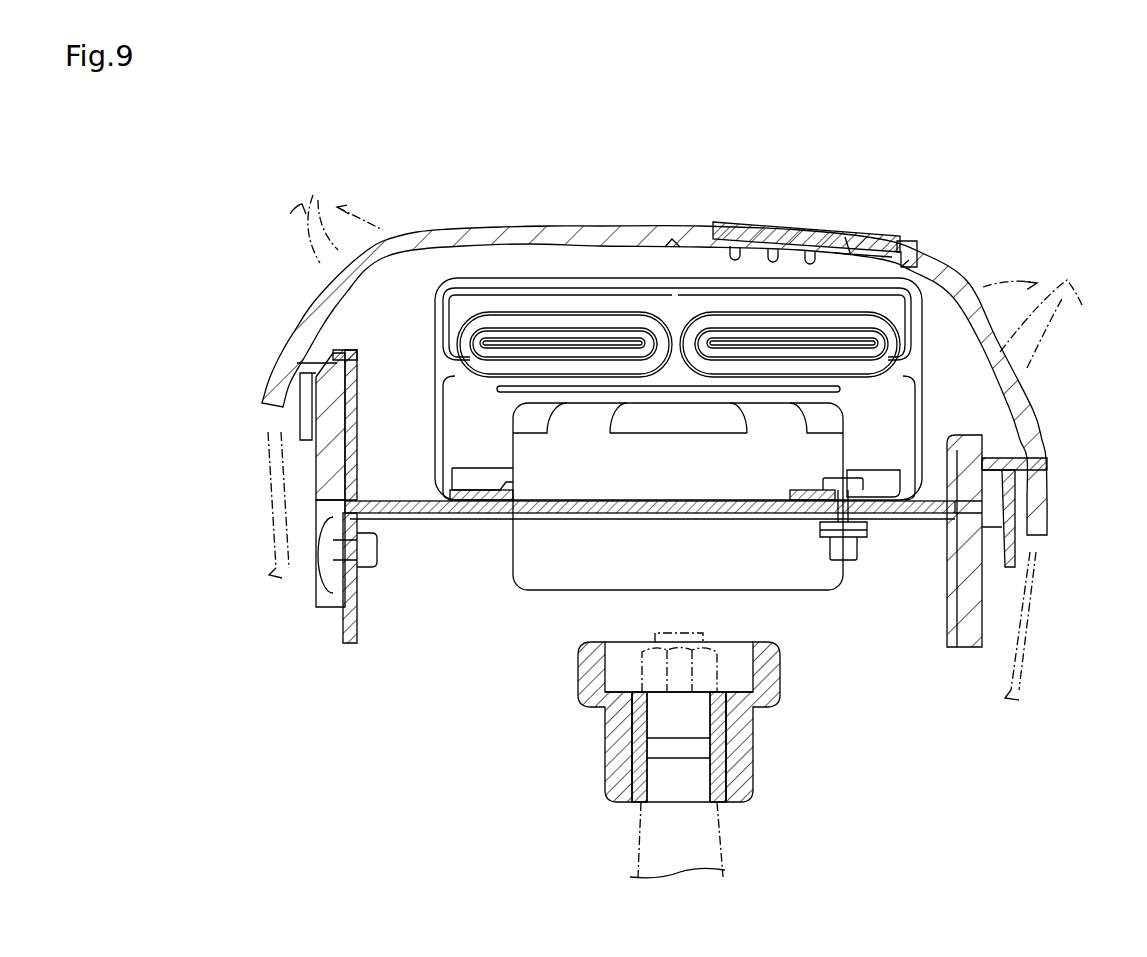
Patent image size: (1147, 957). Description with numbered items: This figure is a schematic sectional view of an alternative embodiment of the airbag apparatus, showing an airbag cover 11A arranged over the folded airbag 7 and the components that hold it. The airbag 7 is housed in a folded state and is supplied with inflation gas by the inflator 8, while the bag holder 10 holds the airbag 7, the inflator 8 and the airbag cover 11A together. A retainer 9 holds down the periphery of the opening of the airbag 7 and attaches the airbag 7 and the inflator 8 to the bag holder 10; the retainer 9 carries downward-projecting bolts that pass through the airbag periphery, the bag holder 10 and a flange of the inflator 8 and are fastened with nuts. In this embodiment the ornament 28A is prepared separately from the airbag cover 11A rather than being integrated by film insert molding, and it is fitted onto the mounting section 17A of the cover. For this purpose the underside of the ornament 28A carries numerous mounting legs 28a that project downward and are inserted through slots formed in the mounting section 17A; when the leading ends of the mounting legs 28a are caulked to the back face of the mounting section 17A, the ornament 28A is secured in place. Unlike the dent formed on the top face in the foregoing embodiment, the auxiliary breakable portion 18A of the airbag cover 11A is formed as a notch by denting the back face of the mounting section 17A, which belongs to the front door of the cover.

The airbag cover 11A is at (987, 267).
The ornament 28A is at (808, 213).
The mounting legs 28a is at (773, 247).
The mounting section 17A is at (853, 252).
The auxiliary breakable portion 18A is at (943, 247).
The airbag 7 is at (925, 408).
The retainer 9 is at (477, 462).
The inflator 8 is at (520, 603).
The bag holder 10 is at (343, 650).